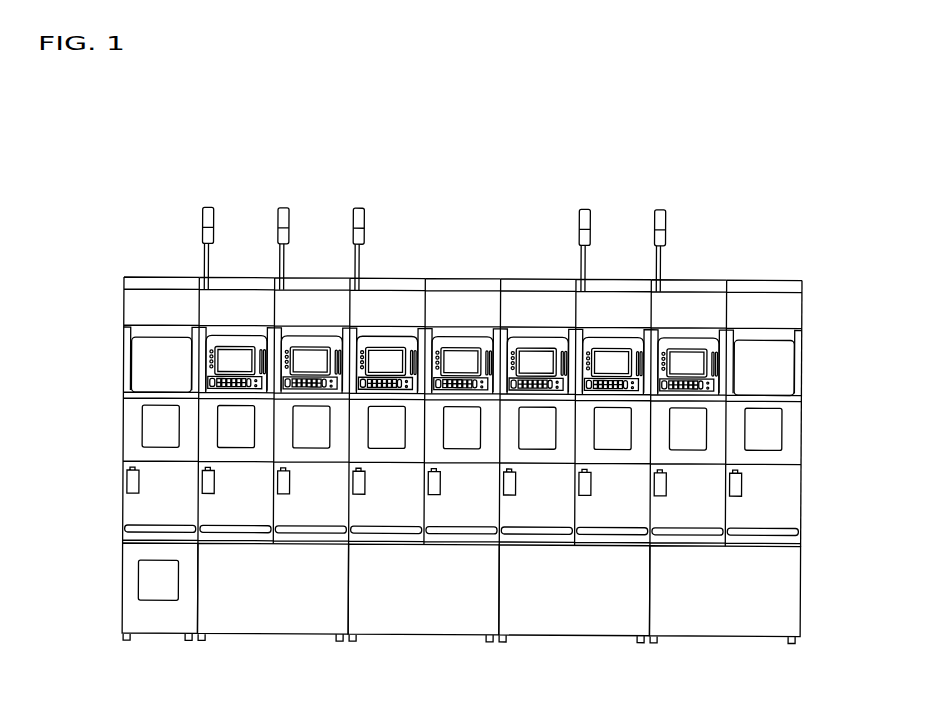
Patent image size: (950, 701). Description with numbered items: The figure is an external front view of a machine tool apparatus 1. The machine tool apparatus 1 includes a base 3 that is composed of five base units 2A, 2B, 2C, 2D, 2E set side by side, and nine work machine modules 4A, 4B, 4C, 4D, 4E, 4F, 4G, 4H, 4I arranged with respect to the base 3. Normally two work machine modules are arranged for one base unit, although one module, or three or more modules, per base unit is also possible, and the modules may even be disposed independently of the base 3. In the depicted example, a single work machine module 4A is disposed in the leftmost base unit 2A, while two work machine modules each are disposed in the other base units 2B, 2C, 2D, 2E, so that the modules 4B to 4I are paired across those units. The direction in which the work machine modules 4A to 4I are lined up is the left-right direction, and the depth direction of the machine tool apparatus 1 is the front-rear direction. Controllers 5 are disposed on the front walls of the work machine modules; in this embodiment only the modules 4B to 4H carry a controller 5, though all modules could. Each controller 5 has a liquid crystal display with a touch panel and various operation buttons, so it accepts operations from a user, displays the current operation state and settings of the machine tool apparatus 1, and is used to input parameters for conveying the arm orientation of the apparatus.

The machine tool apparatus 1 is at (768, 132).
The base unit 2A is at (161, 622).
The base unit 2B is at (269, 622).
The base unit 2C is at (420, 623).
The base unit 2D is at (570, 624).
The base unit 2E is at (728, 626).
The base 3 is at (820, 592).
The work machine module 4A is at (160, 302).
The work machine module 4B is at (181, 375).
The work machine module 4C is at (313, 302).
The work machine module 4D is at (390, 302).
The work machine module 4E is at (464, 302).
The work machine module 4F is at (539, 302).
The work machine module 4G is at (615, 302).
The work machine module 4H is at (692, 302).
The work machine module 4I is at (767, 304).
The controller 5 is at (227, 338).